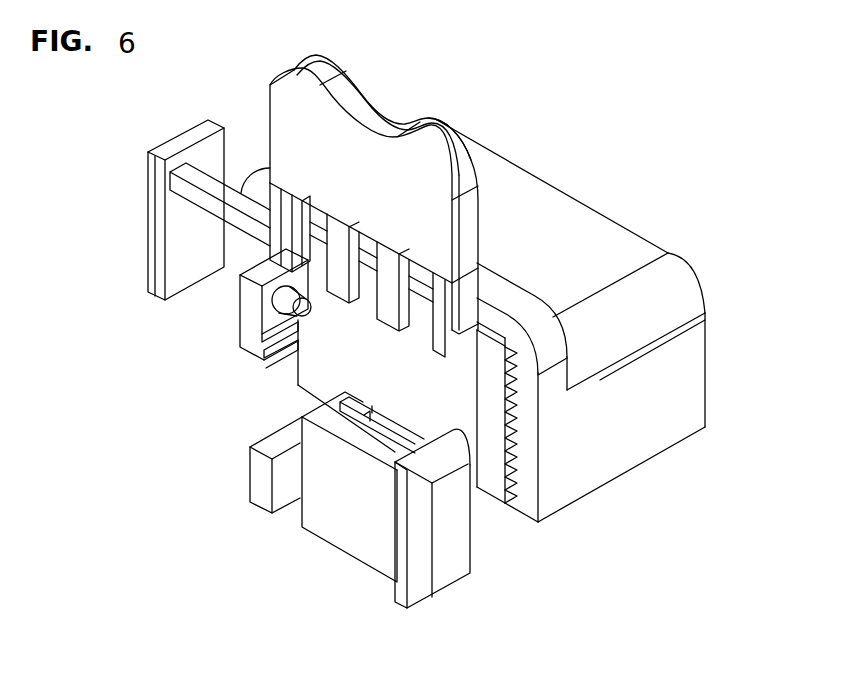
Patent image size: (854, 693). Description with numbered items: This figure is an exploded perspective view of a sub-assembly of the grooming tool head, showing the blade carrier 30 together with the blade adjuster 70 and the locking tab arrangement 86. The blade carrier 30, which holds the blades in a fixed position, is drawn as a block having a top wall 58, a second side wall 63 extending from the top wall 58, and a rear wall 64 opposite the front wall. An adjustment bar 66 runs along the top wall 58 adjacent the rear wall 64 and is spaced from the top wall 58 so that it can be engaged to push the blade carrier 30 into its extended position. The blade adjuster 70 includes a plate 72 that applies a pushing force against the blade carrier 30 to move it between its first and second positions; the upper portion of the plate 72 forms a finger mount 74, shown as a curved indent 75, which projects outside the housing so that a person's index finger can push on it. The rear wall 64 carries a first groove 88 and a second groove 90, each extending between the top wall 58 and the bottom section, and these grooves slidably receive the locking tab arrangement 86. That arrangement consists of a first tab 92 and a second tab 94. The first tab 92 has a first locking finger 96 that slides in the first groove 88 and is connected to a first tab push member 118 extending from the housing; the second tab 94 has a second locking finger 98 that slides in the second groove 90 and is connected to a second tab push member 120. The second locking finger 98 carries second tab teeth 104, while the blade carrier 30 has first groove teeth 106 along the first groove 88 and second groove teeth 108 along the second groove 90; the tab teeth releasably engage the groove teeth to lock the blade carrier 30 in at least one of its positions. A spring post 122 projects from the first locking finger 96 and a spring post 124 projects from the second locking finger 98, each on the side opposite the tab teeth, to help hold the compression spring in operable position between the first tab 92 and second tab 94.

The blade carrier 30 is at (548, 192).
The top wall 58 is at (608, 235).
The second side wall 63 is at (640, 452).
The rear wall 64 is at (528, 510).
The adjustment bar 66 is at (498, 283).
The blade adjuster 70 is at (283, 104).
The plate 72 is at (413, 162).
The finger mount 74 is at (353, 78).
The curved indent 75 is at (377, 106).
The locking tab arrangement 86 is at (138, 433).
The first groove 88 is at (298, 348).
The second groove 90 is at (512, 458).
The first tab 92 is at (122, 178).
The second tab 94 is at (368, 587).
The first locking finger 96 is at (247, 348).
The second locking finger 98 is at (349, 400).
The second tab teeth 104 is at (367, 420).
The first groove teeth 106 is at (262, 362).
The second groove teeth 108 is at (514, 418).
The first tab push member 118 is at (170, 142).
The second tab push member 120 is at (445, 570).
The spring post 122 is at (305, 303).
The spring post 124 is at (258, 443).